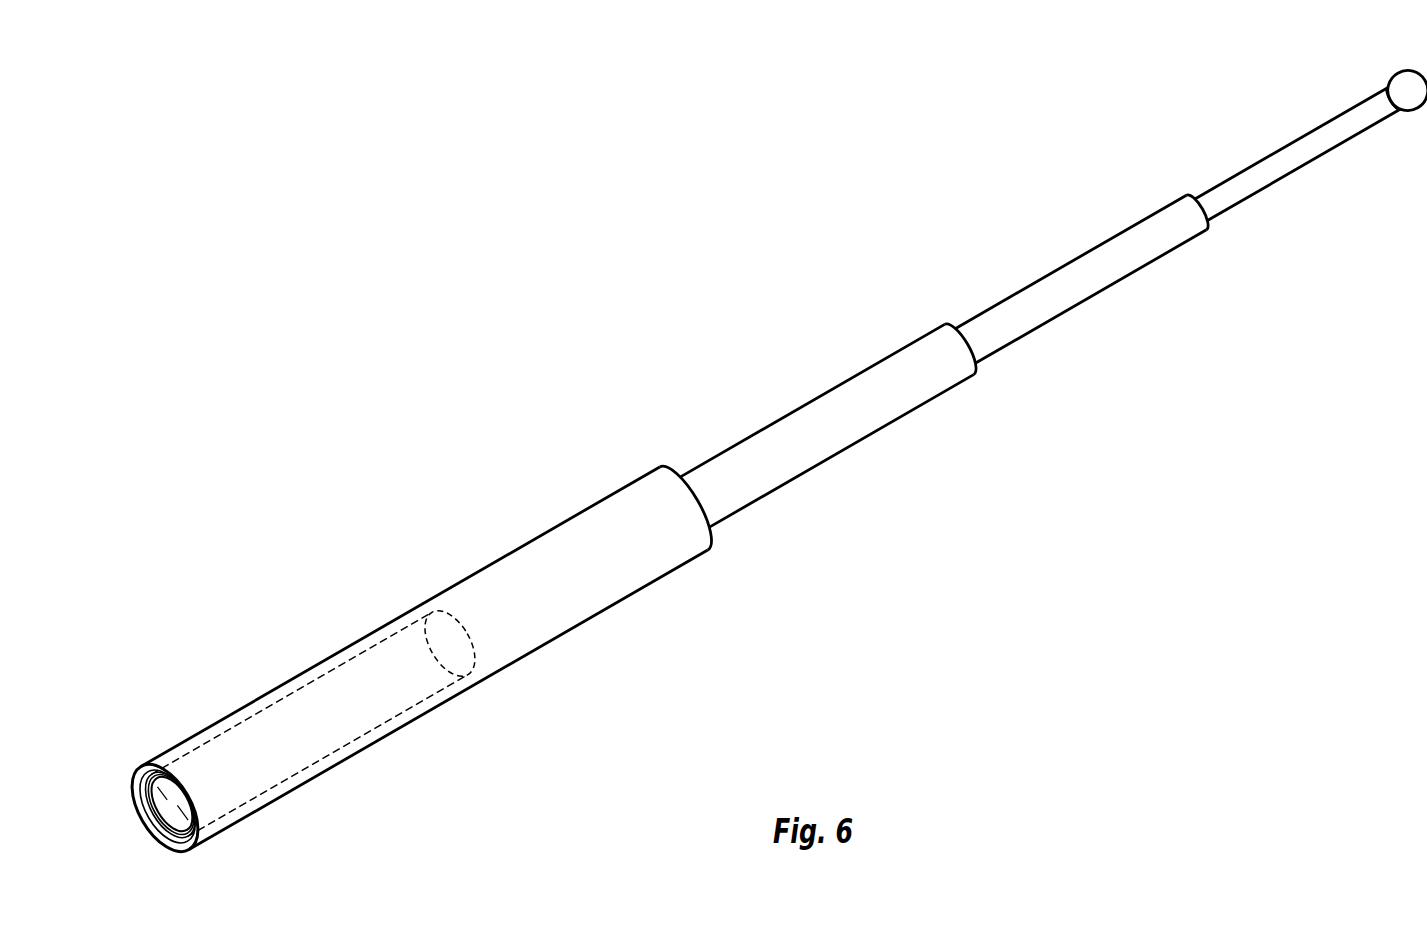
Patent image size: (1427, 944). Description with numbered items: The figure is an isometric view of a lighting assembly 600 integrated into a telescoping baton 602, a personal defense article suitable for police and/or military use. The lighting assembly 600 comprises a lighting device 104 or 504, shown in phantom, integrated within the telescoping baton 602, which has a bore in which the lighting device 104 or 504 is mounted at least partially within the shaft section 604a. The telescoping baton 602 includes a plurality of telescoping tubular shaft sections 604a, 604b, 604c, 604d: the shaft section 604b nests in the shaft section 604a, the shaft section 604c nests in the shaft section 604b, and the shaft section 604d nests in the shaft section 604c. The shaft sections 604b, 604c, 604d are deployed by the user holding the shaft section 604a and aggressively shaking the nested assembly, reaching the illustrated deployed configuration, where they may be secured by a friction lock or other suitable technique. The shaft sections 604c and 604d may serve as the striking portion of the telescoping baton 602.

The lighting assembly 600 is at (488, 182).
The telescoping baton 602 is at (467, 574).
The shaft section 604a is at (553, 553).
The shaft section 604b is at (883, 373).
The shaft section 604c is at (1105, 252).
The shaft section 604d is at (1302, 140).
The lighting device 104 is at (318, 719).
The lighting device 504 is at (315, 692).